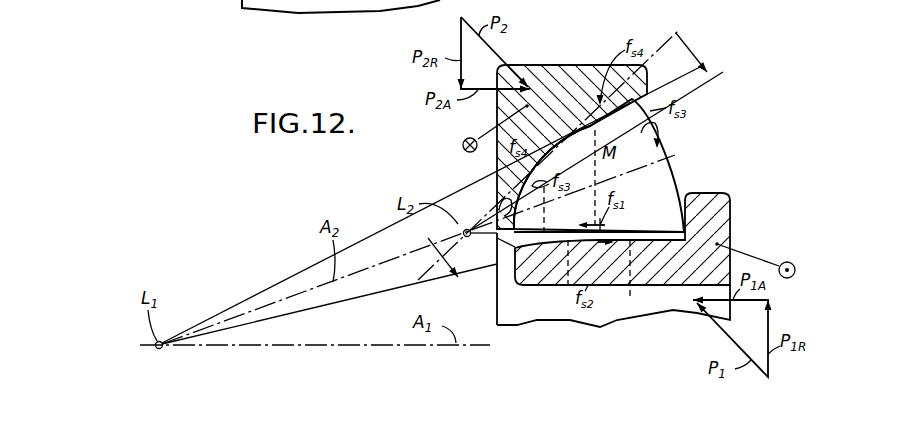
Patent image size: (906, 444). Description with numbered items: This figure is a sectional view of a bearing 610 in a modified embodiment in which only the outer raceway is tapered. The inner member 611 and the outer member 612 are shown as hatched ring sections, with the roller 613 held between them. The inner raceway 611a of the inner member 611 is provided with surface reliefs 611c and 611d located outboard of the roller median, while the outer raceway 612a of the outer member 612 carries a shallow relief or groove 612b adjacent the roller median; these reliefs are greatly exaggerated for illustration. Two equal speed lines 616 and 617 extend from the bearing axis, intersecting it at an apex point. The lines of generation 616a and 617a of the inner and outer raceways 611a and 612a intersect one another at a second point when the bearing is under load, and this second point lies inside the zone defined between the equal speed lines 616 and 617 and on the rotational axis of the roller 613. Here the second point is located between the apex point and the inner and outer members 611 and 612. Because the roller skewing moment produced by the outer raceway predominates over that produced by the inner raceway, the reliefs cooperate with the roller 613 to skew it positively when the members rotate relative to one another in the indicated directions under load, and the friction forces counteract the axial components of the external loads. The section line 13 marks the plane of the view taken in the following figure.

The bearing 610 is at (541, 62).
The inner member 611 is at (650, 278).
The inner raceway 611a is at (590, 242).
The surface relief 611c is at (671, 242).
The surface relief 611d is at (524, 244).
The outer member 612 is at (503, 110).
The outer raceway 612a is at (503, 214).
The shallow relief or groove 612b is at (578, 127).
The roller 613 is at (637, 180).
The equal speed line 616 is at (273, 321).
The line of generation 616a is at (496, 237).
The equal speed line 617 is at (232, 312).
The line of generation 617a is at (447, 197).
The section line 13- 13 is at (554, 145).